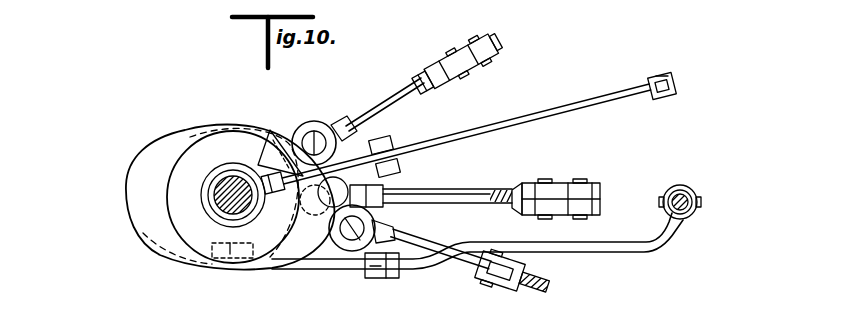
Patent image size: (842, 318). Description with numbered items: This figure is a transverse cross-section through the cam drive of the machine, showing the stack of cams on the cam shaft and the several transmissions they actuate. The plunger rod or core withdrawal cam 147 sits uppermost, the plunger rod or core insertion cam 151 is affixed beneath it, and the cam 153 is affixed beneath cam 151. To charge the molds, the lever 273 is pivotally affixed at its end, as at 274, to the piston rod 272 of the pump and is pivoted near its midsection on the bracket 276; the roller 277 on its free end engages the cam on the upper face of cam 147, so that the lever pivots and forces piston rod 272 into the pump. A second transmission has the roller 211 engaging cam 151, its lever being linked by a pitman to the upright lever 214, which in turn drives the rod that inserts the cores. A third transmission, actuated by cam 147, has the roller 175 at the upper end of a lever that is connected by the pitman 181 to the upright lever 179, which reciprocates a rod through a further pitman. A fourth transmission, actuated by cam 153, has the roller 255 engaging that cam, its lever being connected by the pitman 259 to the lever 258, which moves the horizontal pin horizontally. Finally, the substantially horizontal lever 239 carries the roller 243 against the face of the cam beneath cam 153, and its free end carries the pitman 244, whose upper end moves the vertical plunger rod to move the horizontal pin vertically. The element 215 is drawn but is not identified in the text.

The cam 153 is at (127, 187).
The plunger rod or core insertion cam 151 is at (158, 257).
The plunger rod or core withdrawal cam 147 is at (202, 136).
The roller 243 is at (212, 258).
The lever 239 is at (282, 268).
The roller 277 is at (268, 140).
The roller 211 is at (314, 124).
The rod 215 is at (386, 103).
The upright lever 214 is at (448, 86).
The bracket 276 is at (390, 140).
The roller 255 is at (394, 182).
The pitman 259 is at (471, 192).
The lever 273 is at (583, 104).
The pivotal connection 274 is at (662, 76).
The piston rod 272 is at (676, 86).
The lever 258 is at (549, 197).
The pitman 244 is at (690, 190).
The pitman 181 is at (424, 248).
The roller 175 is at (352, 251).
The upright lever 179 is at (551, 286).